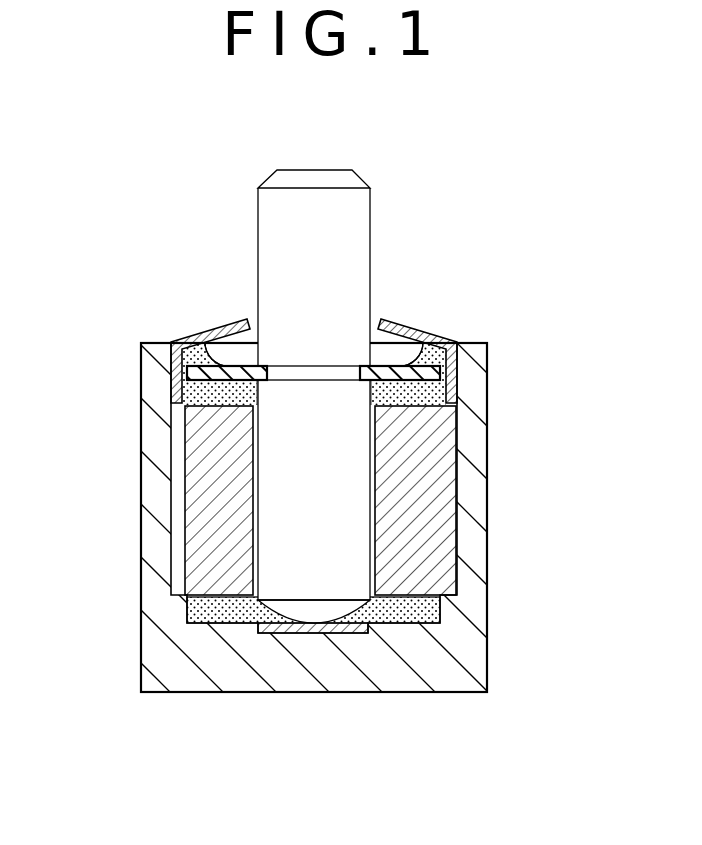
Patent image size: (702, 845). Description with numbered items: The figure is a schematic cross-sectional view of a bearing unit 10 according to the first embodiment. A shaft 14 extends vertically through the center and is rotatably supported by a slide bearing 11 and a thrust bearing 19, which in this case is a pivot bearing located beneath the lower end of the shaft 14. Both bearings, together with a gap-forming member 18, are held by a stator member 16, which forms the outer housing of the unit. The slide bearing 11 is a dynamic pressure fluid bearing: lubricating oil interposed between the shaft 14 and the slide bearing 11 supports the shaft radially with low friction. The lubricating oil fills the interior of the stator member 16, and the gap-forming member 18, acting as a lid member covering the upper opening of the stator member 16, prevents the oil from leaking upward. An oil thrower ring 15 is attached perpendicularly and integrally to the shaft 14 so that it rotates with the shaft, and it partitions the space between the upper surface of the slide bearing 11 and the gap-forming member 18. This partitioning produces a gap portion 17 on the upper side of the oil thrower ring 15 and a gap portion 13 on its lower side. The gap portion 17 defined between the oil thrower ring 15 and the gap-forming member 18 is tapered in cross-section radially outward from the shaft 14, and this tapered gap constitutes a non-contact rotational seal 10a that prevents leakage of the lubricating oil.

The bearing unit 10 is at (120, 228).
The non-contact rotational seal 10a is at (487, 195).
The slide bearing 11 is at (197, 512).
The gap portion 13 is at (190, 392).
The shaft 14 is at (325, 203).
The oil thrower ring 15 is at (192, 333).
The stator member 16 is at (460, 637).
The gap portion 17 is at (235, 348).
The gap-forming member 18 is at (457, 362).
The thrust bearing 19 is at (318, 633).